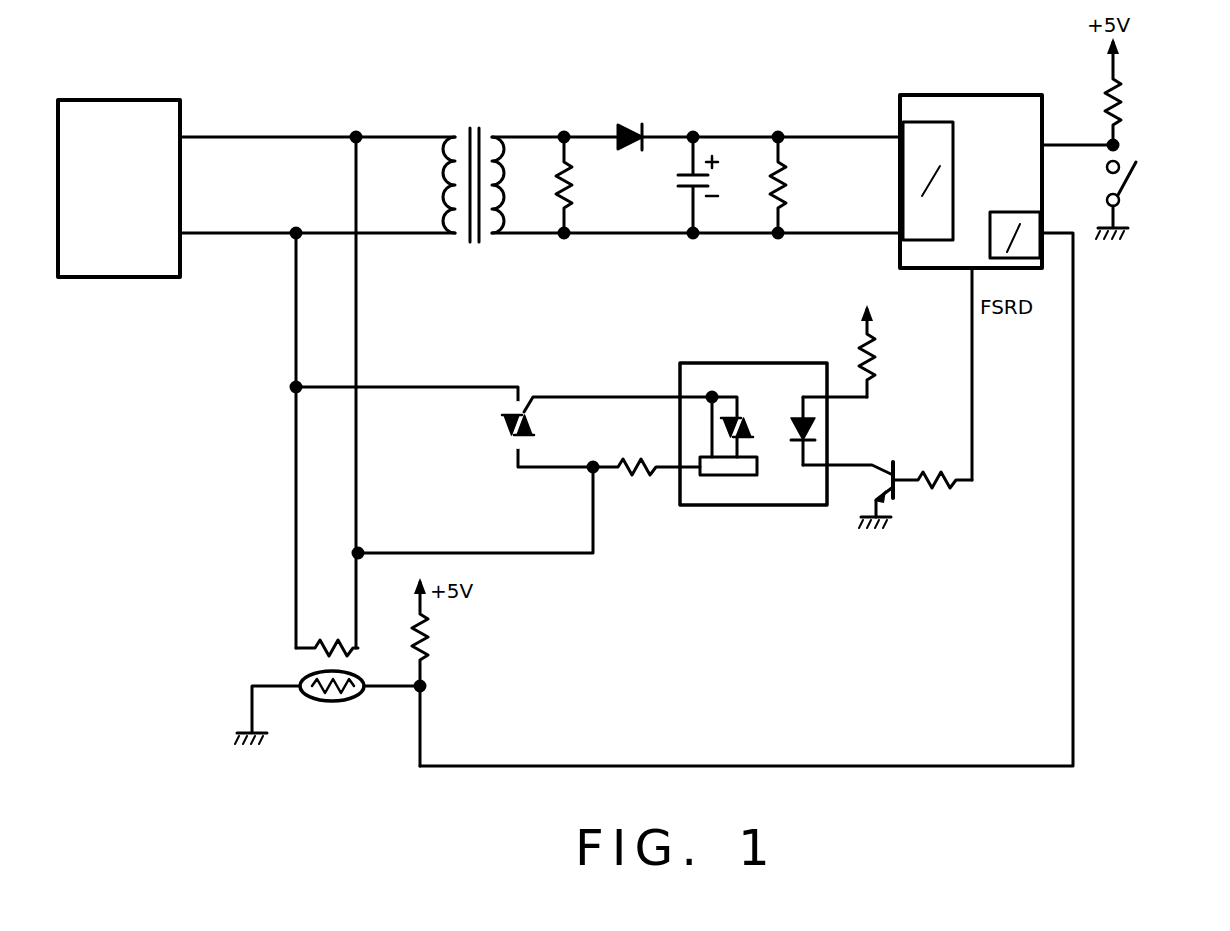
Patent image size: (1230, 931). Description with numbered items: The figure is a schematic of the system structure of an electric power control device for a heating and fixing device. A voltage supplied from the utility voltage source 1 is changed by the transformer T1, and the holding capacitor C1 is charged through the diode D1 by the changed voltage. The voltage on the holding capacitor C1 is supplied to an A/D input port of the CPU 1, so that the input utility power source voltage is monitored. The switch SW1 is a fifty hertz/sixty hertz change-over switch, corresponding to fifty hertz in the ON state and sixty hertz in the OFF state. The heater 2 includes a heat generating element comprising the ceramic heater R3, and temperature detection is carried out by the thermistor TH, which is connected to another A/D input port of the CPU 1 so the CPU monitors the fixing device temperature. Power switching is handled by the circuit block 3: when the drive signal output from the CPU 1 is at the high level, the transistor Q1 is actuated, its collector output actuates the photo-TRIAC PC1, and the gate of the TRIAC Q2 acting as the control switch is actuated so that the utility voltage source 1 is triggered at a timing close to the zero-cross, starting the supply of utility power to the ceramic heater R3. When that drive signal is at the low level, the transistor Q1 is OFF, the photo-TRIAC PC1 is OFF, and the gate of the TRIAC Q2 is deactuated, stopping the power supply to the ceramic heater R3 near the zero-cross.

The utility voltage source 1 is at (122, 100).
The heater 2 is at (283, 630).
The switching circuit block 3 is at (828, 475).
The transformer T1 is at (480, 132).
The diode D1 is at (630, 126).
The holding capacitor C1 is at (714, 180).
The CPU CPU1 is at (985, 95).
The switch SW1 is at (1127, 186).
The TRIAC Q2 is at (505, 418).
The photo-TRIAC PC1 is at (741, 508).
The transistor Q1 is at (880, 462).
The ceramic heater R3 is at (312, 651).
The thermistor TH is at (333, 702).